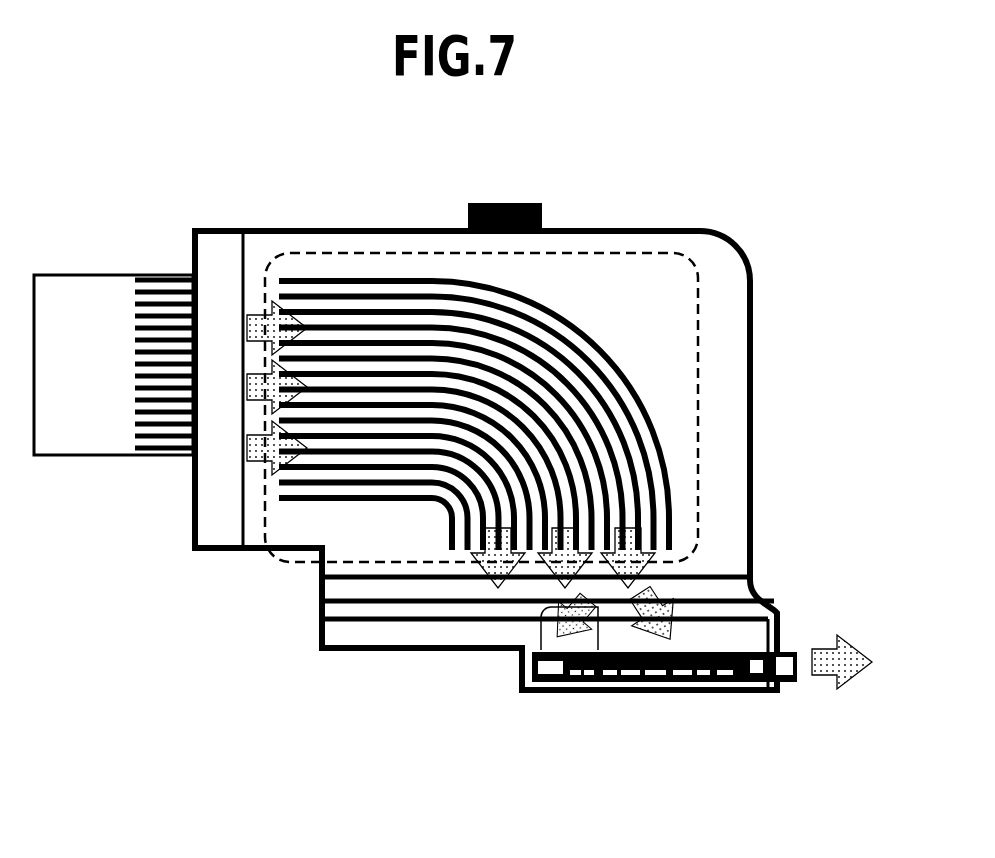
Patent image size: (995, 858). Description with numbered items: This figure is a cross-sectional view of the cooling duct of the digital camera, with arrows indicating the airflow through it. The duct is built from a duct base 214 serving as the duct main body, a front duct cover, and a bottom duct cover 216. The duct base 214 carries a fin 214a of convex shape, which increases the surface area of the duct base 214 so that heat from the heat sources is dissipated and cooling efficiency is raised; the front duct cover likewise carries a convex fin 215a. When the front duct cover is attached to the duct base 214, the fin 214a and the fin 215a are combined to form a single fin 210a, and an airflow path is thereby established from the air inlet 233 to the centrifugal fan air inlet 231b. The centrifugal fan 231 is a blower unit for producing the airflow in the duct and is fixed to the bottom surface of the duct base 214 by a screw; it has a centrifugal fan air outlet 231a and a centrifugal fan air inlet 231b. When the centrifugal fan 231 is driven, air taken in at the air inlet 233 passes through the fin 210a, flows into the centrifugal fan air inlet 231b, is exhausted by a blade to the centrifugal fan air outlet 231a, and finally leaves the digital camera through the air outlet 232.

The duct base 214 is at (752, 397).
The fin 214a is at (355, 278).
The fin 210a is at (705, 309).
The fin 215a is at (670, 520).
The air inlet 233 is at (215, 482).
The bottom duct cover 216 is at (437, 650).
The centrifugal fan 231 is at (611, 682).
The centrifugal fan air outlet 231a is at (757, 682).
The centrifugal fan air inlet 231b is at (727, 648).
The air outlet 232 is at (790, 683).